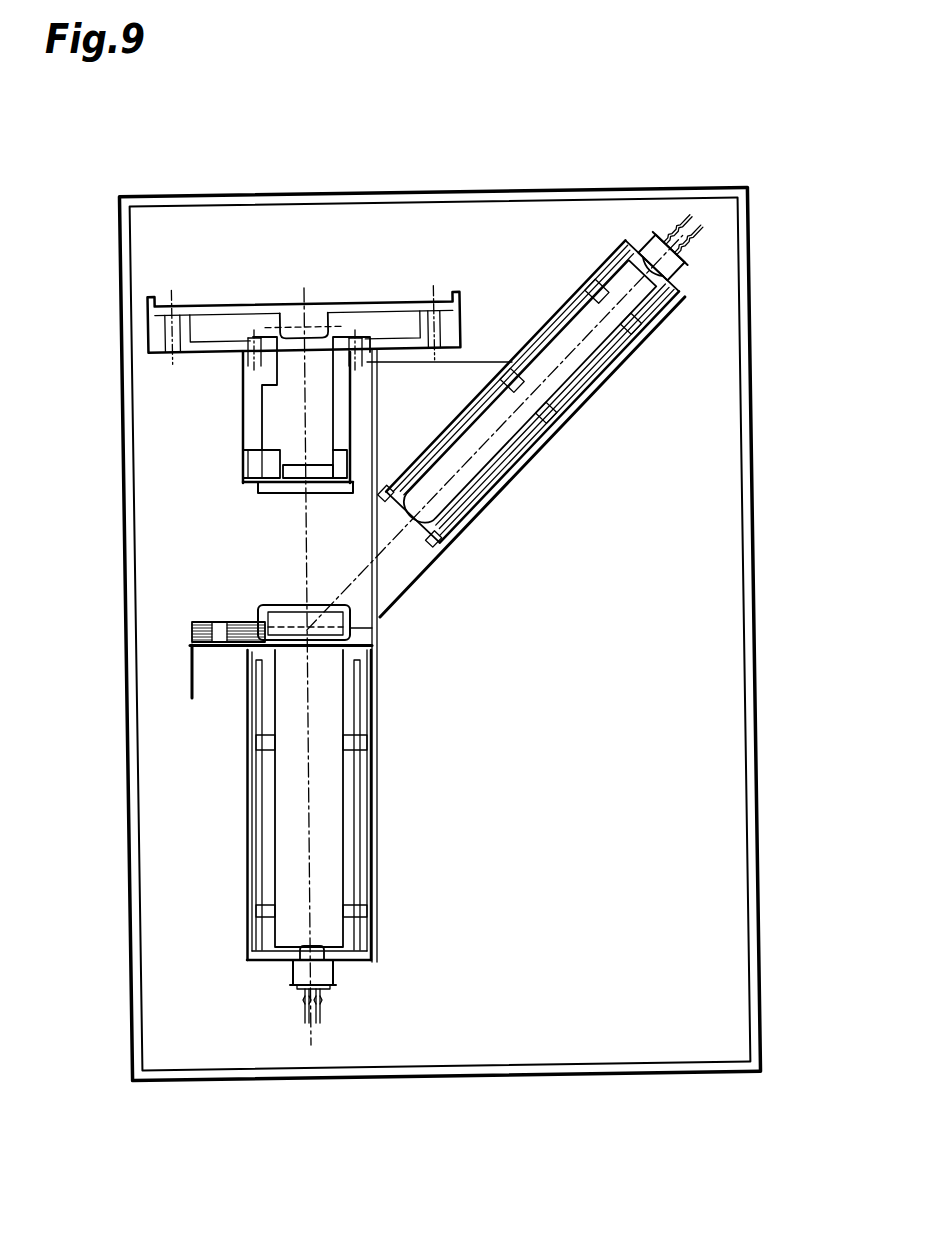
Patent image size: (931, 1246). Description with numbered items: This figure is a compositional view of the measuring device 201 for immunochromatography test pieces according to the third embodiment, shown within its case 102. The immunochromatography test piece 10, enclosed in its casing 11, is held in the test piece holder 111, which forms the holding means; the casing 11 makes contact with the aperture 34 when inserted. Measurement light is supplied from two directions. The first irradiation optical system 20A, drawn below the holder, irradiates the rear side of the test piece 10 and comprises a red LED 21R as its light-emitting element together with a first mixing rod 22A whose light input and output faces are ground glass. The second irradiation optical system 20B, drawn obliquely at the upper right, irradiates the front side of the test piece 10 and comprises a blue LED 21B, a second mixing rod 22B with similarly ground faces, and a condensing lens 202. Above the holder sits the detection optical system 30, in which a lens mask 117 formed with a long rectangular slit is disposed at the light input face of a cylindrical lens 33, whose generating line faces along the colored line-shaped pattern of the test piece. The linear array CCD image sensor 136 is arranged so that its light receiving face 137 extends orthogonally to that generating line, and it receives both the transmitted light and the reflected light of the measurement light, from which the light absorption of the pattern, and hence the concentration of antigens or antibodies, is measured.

The measuring device 201 is at (182, 163).
The case 102 is at (752, 270).
The detection optical system 30 is at (232, 409).
The cylindrical lens 33 is at (294, 466).
The lens mask 117 is at (290, 494).
The linear array CCD image sensor 136 is at (332, 320).
The light receiving face 137 is at (297, 312).
The aperture 34 is at (287, 604).
The casing 11 is at (258, 617).
The immunochromatography test piece 10 is at (373, 646).
The test piece holder 111 is at (354, 627).
The first irradiation optical system 20A is at (230, 786).
The second irradiation optical system 20B is at (537, 478).
The first mixing rod 22A is at (327, 858).
The second mixing rod 22B is at (562, 370).
The red LED 21R is at (300, 967).
The blue LED 21B is at (687, 283).
The condensing lens 202 is at (424, 521).